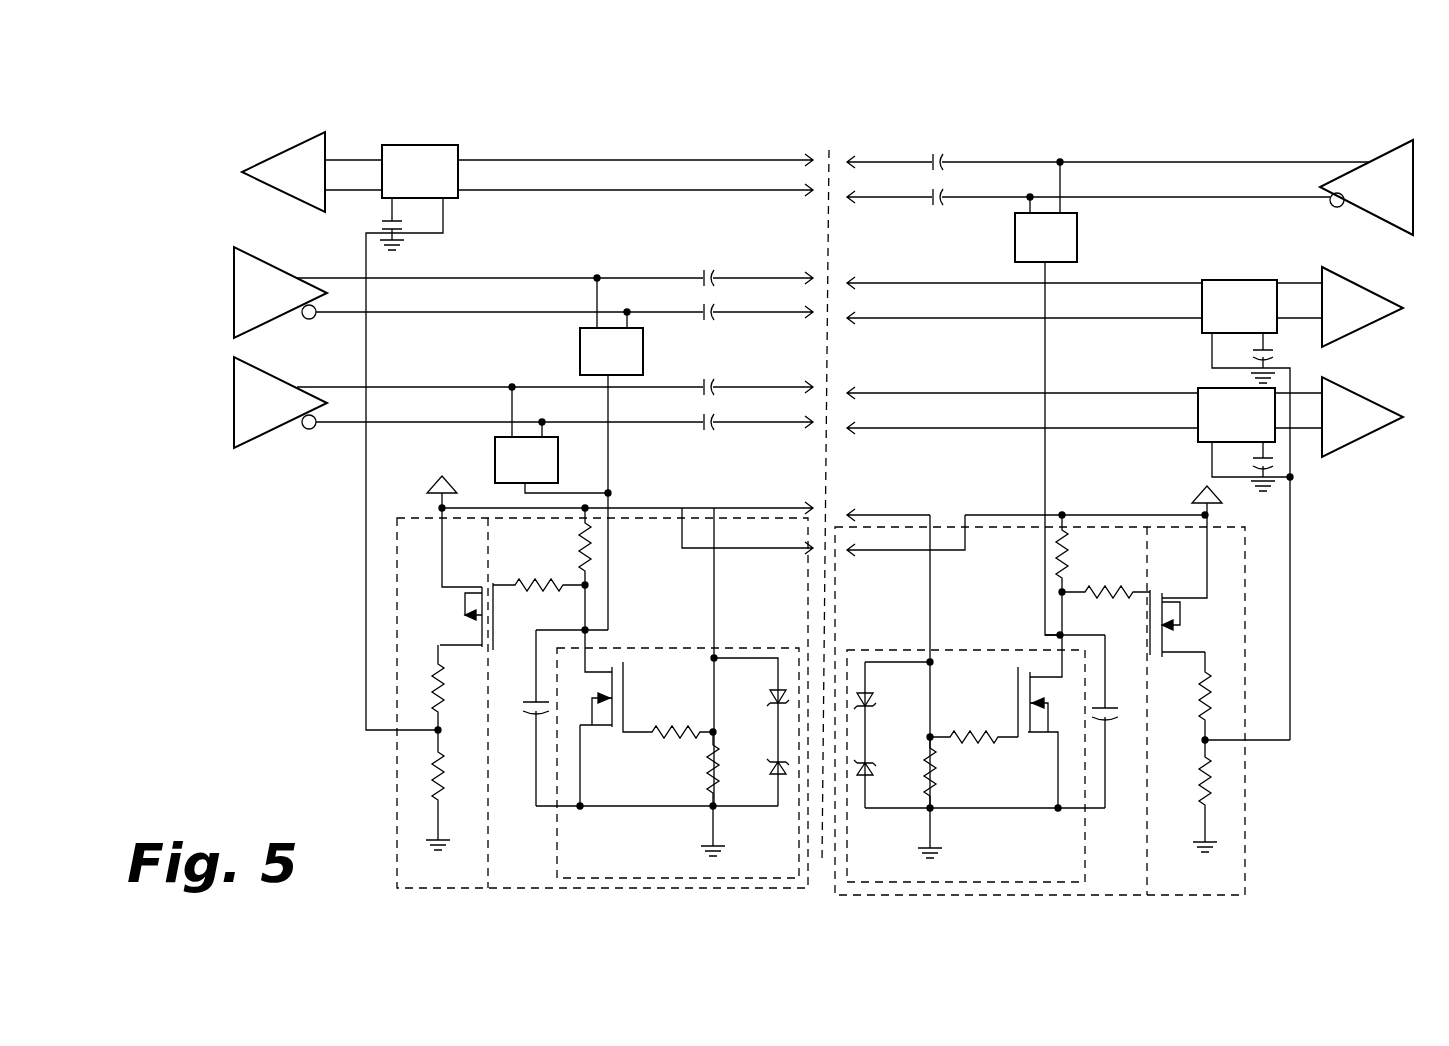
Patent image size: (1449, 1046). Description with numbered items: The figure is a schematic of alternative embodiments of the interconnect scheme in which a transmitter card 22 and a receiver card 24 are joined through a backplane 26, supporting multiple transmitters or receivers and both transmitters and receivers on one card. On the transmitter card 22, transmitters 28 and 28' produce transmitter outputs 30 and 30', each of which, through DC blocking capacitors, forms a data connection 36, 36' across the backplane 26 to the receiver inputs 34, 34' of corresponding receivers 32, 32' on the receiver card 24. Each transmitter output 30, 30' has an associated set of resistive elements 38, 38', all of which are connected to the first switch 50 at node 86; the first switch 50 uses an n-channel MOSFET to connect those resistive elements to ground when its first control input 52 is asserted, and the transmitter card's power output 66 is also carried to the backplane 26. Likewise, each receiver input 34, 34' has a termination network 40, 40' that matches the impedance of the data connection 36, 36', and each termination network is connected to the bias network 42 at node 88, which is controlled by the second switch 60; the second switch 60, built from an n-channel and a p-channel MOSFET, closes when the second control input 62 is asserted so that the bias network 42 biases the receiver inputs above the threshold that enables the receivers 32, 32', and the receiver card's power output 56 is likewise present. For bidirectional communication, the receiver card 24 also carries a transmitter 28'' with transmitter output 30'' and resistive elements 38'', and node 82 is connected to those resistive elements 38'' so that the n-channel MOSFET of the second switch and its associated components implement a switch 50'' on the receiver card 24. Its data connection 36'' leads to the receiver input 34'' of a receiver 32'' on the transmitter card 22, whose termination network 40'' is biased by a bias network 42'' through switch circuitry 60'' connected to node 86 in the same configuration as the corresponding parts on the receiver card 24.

The transmitter card 22 is at (617, 150).
The receiver card 24 is at (1107, 153).
The backplane 26 is at (824, 146).
The transmitter 28 is at (280, 402).
The transmitter 28' is at (280, 292).
The transmitter 28'' is at (1366, 187).
The transmitter output 30 is at (280, 395).
The transmitter output 30' is at (280, 276).
The transmitter output 30'' is at (1356, 173).
The receiver 32 is at (1377, 425).
The receiver 32' is at (1380, 315).
The receiver 32'' is at (285, 172).
The receiver input 34 is at (1125, 420).
The receiver input 34' is at (1125, 486).
The receiver input 34'' is at (342, 417).
The data connection 36 is at (555, 404).
The data connection 36' is at (555, 296).
The data connection 36'' is at (1155, 161).
The resistive elements 38 is at (553, 440).
The resistive elements 38' is at (611, 452).
The resistive elements 38'' is at (1046, 397).
The termination network 40 is at (1236, 415).
The termination network 40' is at (1239, 306).
The termination network 40'' is at (420, 171).
The bias network 42 is at (1088, 690).
The bias network 42'' is at (554, 682).
The first switch 50 is at (667, 795).
The switch 50'' is at (976, 796).
The first control input 52 is at (715, 613).
The power output 56 is at (913, 513).
The second switch 60 is at (1065, 735).
The switch 60'' is at (540, 730).
The second control input 62 is at (930, 615).
The power output 66 is at (732, 550).
The node 82 is at (1058, 637).
The node 86 is at (585, 632).
The node 88 is at (1197, 741).